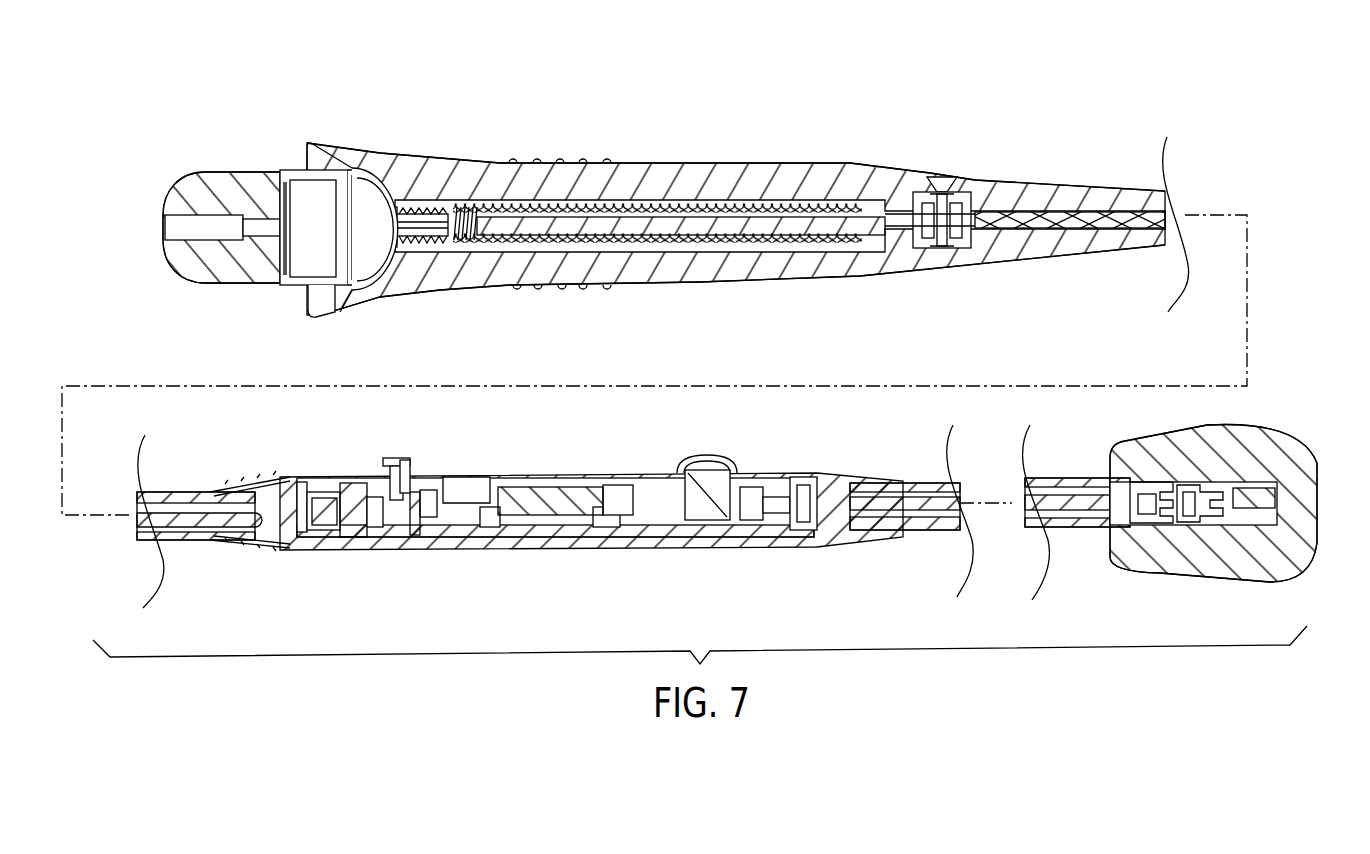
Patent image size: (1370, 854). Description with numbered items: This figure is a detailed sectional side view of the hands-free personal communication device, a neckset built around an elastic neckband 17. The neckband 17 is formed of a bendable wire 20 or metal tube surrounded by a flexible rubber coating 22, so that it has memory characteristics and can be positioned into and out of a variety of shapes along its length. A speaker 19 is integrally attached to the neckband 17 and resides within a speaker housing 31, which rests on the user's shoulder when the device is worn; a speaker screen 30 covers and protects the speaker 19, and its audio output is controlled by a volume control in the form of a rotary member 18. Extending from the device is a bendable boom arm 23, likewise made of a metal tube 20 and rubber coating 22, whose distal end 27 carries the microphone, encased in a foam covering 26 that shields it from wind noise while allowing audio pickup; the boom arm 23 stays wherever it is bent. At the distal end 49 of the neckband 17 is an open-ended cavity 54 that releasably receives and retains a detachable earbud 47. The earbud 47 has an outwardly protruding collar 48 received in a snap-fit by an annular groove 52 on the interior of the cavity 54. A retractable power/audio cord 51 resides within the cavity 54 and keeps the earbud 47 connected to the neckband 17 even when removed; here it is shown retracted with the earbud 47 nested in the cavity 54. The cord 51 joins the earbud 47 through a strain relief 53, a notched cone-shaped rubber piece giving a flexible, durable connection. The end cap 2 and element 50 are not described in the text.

The handle end cap 2 is at (1300, 543).
The elastic neckband 17 is at (998, 190).
The rotary member 18 is at (712, 468).
The speaker 19 is at (548, 488).
The bendable wire 20 is at (1093, 192).
The flexible rubber coating 22 is at (860, 177).
The bendable boom arm 23 is at (1052, 535).
The foam covering 26 is at (1237, 520).
The distal end 27 is at (1093, 558).
The speaker screen 30 is at (492, 473).
The speaker housing 31 is at (441, 573).
The earbud 47 is at (200, 178).
The outwardly protruding collar 48 is at (360, 178).
The distal end 49 is at (413, 313).
The block 50 is at (300, 170).
The retractable power/audio cord 51 is at (690, 202).
The annular groove 52 is at (350, 166).
The strain relief 53 is at (418, 214).
The open-ended cavity 54 is at (322, 302).